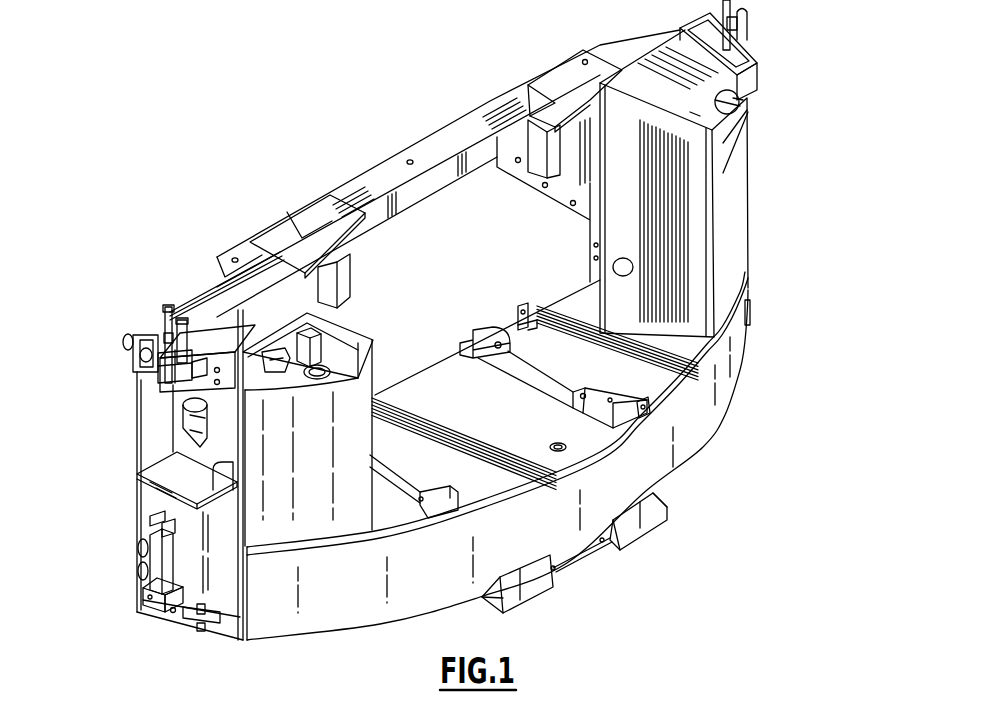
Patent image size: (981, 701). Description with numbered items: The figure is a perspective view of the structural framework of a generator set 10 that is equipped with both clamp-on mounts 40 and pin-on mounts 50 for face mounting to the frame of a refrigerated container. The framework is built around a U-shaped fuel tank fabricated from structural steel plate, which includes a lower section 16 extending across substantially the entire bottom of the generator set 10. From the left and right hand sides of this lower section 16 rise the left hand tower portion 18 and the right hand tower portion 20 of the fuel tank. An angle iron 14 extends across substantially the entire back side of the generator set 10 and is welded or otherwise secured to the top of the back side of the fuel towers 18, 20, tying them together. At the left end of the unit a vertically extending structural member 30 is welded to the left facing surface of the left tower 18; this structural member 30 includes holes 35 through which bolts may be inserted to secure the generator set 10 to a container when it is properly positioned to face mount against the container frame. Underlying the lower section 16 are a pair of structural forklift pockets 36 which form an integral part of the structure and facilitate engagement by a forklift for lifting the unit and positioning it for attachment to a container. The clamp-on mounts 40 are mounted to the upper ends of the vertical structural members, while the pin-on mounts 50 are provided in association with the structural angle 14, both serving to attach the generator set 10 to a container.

The generator set 10 is at (443, 321).
The angle iron 14 is at (413, 140).
The lower section 16 is at (698, 427).
The left hand tower portion 18 is at (372, 431).
The right hand tower portion 20 is at (735, 217).
The left hand vertically extending structural member 30 is at (137, 448).
The holes 35 is at (140, 574).
The structural forklift pockets 36 is at (541, 598).
The clamp-on mounts 40 is at (752, 64).
The pin-on mounts 50 is at (296, 245).